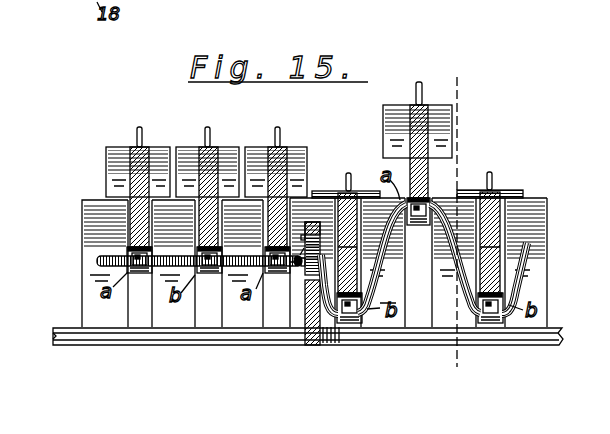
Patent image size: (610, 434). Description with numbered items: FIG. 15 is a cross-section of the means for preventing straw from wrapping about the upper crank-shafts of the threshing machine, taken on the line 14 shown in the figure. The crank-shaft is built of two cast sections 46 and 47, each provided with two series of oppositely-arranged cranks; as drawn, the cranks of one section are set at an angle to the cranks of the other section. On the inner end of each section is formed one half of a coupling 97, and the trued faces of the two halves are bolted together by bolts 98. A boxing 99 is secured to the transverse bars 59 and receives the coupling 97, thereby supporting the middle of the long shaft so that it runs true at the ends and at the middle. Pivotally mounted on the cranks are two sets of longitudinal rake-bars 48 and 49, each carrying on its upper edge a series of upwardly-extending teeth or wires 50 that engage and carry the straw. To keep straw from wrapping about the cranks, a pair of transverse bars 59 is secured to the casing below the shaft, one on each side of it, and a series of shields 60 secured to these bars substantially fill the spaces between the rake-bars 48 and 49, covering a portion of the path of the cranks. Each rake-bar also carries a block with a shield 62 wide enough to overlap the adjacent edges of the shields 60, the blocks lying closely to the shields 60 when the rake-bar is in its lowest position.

The section line 14 is at (446, 68).
The crank-shaft section 46 is at (417, 200).
The crank-shaft section 47 is at (198, 283).
The rake-bar 48 is at (82, 231).
The rake-bar 49 is at (197, 240).
The teeth or wires 50 is at (205, 128).
The transverse bar 59 is at (272, 347).
The shield 60 is at (93, 273).
The shield 62 is at (257, 147).
The coupling 97 is at (303, 287).
The bolt 98 is at (302, 277).
The boxing 99 is at (327, 343).